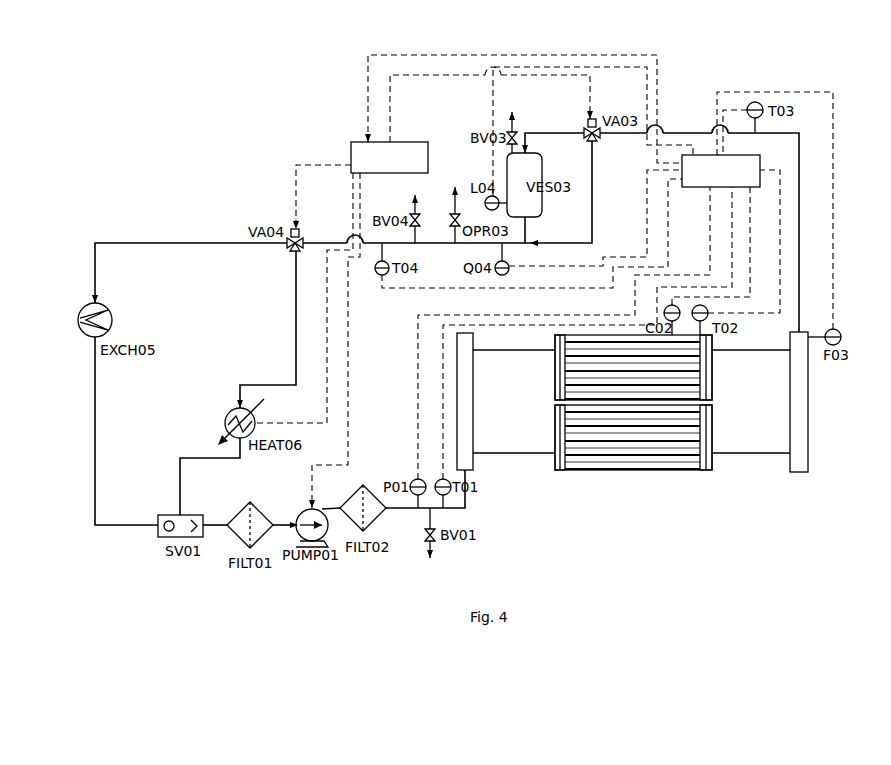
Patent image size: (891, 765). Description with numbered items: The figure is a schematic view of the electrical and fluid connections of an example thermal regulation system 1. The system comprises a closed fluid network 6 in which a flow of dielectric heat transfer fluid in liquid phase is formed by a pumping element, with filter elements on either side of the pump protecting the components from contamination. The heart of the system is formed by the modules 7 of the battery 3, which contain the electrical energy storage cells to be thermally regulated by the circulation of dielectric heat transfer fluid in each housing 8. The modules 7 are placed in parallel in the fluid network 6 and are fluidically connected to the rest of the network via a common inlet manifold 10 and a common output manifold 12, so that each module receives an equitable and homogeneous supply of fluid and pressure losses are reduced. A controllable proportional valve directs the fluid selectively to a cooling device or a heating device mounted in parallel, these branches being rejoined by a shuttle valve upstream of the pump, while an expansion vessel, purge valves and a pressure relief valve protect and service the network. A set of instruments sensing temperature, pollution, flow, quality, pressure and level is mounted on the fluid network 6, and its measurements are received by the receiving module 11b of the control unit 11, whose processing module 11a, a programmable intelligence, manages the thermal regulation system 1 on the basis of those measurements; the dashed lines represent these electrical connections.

The thermal regulation system 1 is at (854, 113).
The battery 3 is at (663, 438).
The fluid network 6 is at (210, 236).
The modules 7 is at (728, 383).
The housing 8 is at (672, 482).
The common inlet manifold 10 is at (474, 463).
The control unit 11 is at (732, 65).
The processing module 11a is at (405, 150).
The receiving module 11b is at (752, 162).
The common output manifold 12 is at (798, 472).